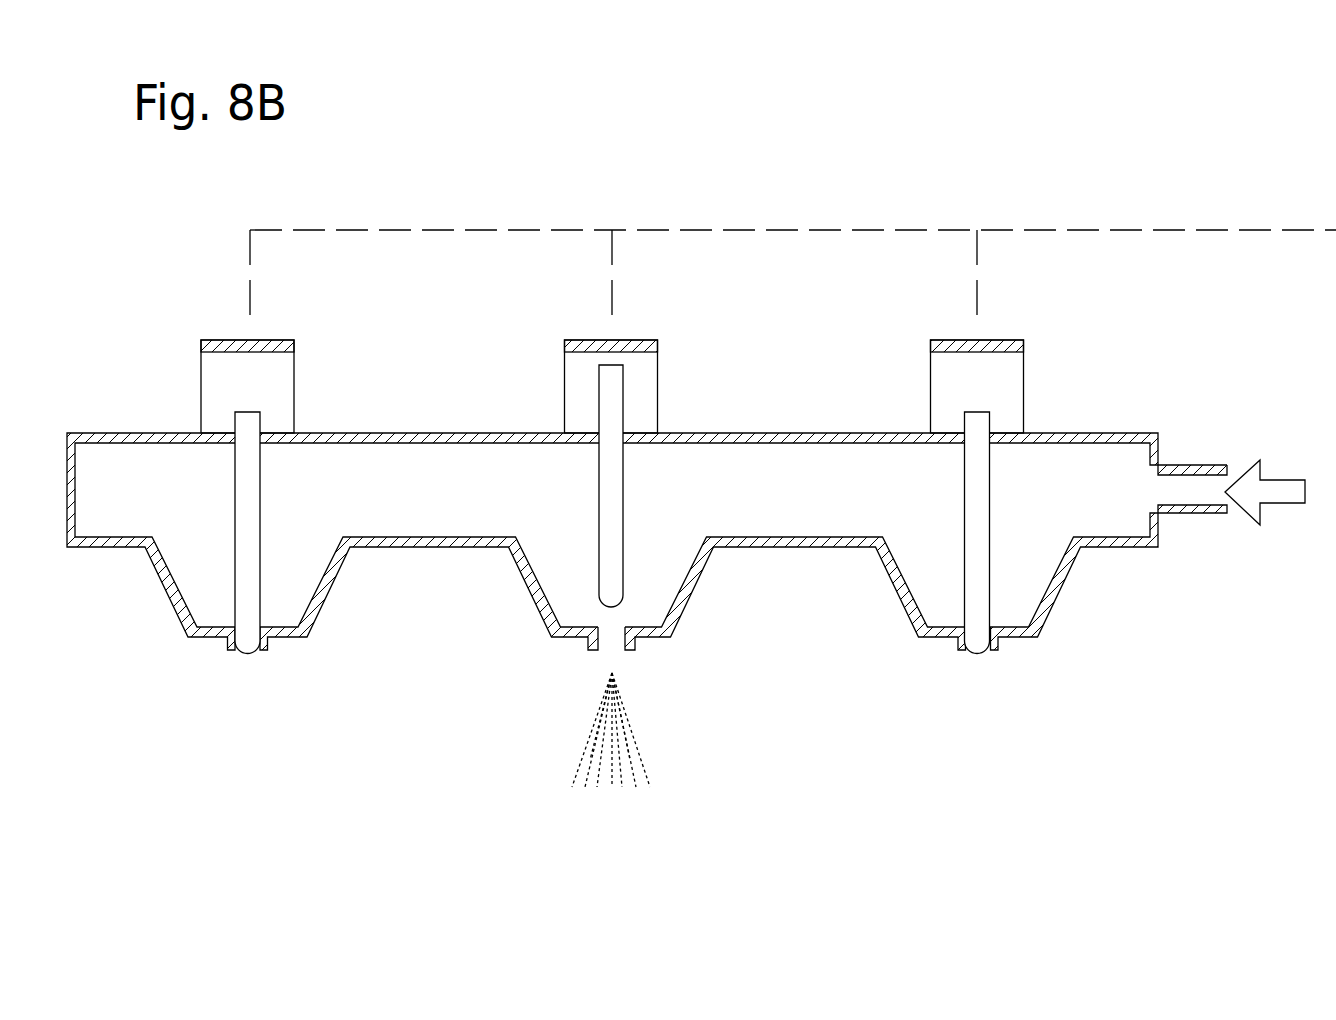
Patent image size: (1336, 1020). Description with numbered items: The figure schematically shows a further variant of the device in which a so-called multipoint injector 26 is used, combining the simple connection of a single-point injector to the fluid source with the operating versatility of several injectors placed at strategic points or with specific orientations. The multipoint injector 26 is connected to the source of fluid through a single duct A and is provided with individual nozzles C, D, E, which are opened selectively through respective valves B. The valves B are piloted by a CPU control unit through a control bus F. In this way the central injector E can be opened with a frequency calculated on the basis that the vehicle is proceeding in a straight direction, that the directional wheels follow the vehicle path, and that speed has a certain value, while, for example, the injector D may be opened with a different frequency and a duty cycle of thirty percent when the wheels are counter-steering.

The injector 26 is at (782, 582).
The single duct A is at (1195, 465).
The valves B is at (268, 375).
The nozzle C is at (615, 576).
The nozzle D is at (992, 533).
The nozzle E is at (261, 533).
The control bus F is at (793, 258).